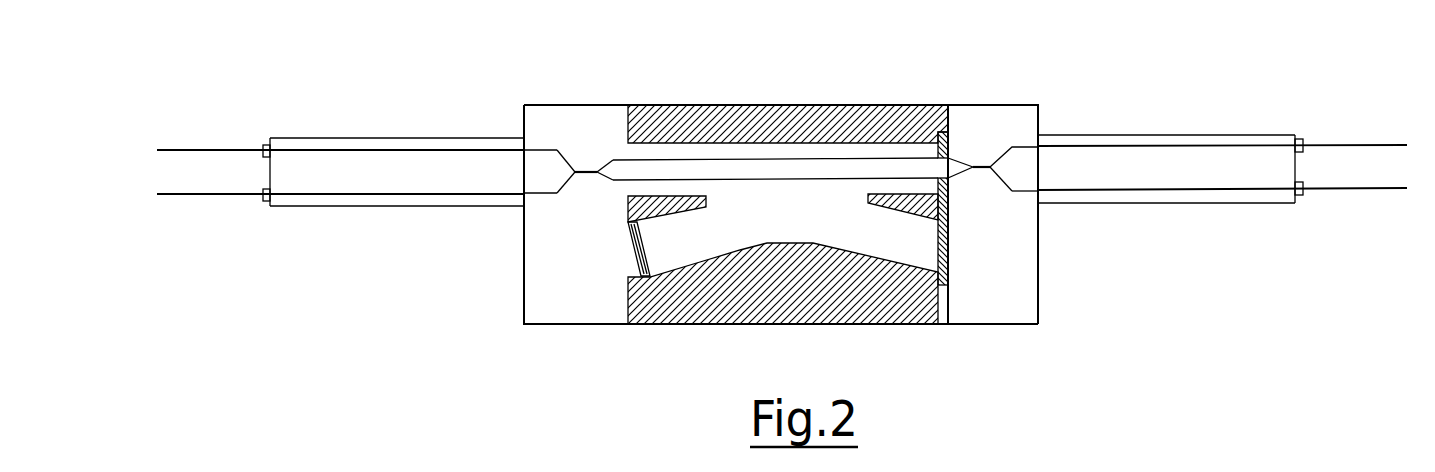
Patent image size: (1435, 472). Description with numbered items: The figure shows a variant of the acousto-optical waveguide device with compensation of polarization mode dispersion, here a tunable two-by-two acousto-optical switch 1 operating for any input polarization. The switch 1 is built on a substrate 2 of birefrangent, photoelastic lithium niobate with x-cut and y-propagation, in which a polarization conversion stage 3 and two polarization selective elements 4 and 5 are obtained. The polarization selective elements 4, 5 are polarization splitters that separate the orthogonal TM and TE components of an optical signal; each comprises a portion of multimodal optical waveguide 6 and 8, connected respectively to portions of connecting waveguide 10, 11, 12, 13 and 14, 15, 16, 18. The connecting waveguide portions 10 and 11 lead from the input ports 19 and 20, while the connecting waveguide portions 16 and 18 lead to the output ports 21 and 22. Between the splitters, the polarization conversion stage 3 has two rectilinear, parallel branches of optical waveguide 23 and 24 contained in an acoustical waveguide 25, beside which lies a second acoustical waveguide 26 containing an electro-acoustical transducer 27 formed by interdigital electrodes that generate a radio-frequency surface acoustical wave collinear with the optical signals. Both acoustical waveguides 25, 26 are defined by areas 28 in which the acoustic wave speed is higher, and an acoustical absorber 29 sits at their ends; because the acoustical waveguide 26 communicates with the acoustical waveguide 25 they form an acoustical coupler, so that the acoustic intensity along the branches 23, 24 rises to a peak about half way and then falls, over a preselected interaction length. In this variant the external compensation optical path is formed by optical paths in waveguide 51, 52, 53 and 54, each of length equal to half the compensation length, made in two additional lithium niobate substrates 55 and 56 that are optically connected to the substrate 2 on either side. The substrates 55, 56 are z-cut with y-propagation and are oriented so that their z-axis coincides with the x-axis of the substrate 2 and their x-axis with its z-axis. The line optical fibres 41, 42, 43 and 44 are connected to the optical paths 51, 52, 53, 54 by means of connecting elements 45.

The acousto-optical switch 1 is at (1034, 97).
The substrate 2 is at (547, 278).
The polarization conversion stage 3 is at (684, 98).
The polarization selective element 4 is at (578, 166).
The polarization selective element 5 is at (992, 160).
The portion of multimodal optical waveguide 6 is at (598, 168).
The portion of multimodal optical waveguide 8 is at (978, 166).
The portion of connecting waveguide 10 is at (543, 150).
The portion of connecting waveguide 11 is at (563, 184).
The portion of connecting waveguide 12 is at (607, 163).
The portion of connecting waveguide 13 is at (600, 183).
The portion of connecting waveguide 14 is at (972, 166).
The portion of connecting waveguide 15 is at (972, 170).
The portion of connecting waveguide 16 is at (1038, 120).
The portion of connecting waveguide 18 is at (1022, 205).
The input port 19 is at (524, 131).
The input port 20 is at (545, 193).
The output port 21 is at (1060, 136).
The output port 22 is at (1038, 191).
The branch of optical waveguide 23 is at (825, 153).
The branch of optical waveguide 24 is at (712, 156).
The acoustical waveguide 25 is at (843, 152).
The acoustical waveguide 26 is at (690, 237).
The electro-acoustical transducer 27 is at (634, 260).
The area 28 is at (760, 122).
The acoustical absorber 29 is at (951, 268).
The line optical fibre 41 is at (195, 148).
The line optical fibre 42 is at (200, 197).
The line optical fibre 43 is at (1358, 144).
The line optical fibre 44 is at (1354, 191).
The connecting element 45 is at (259, 146).
The optical path in waveguide 51 is at (368, 147).
The optical path in waveguide 52 is at (368, 200).
The optical path in waveguide 53 is at (1178, 144).
The optical path in waveguide 54 is at (1180, 192).
The additional substrate of lithium niobate 55 is at (298, 206).
The additional substrate of lithium niobate 56 is at (1250, 205).